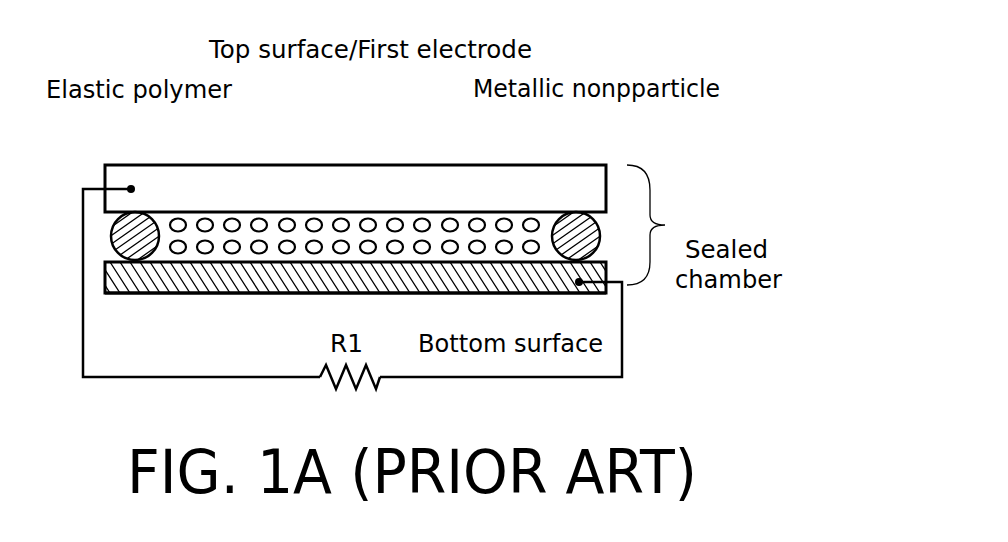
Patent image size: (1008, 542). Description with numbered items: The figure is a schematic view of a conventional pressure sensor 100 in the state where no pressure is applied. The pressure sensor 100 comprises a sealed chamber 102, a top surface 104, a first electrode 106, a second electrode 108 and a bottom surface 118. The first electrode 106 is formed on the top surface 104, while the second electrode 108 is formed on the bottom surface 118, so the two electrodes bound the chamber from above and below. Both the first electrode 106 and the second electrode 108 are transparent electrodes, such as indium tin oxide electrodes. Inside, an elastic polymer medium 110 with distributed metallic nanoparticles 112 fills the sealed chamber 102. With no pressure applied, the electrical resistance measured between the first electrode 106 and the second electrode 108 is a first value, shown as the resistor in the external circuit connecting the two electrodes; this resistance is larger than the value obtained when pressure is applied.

The pressure sensor 100 is at (598, 38).
The sealed chamber 102 is at (675, 225).
The top surface 104 is at (355, 143).
The first electrode 106 is at (347, 180).
The second electrode 108 is at (168, 293).
The elastic polymer medium 110 is at (219, 236).
The metallic nanoparticles 112 is at (477, 223).
The bottom surface 118 is at (428, 298).